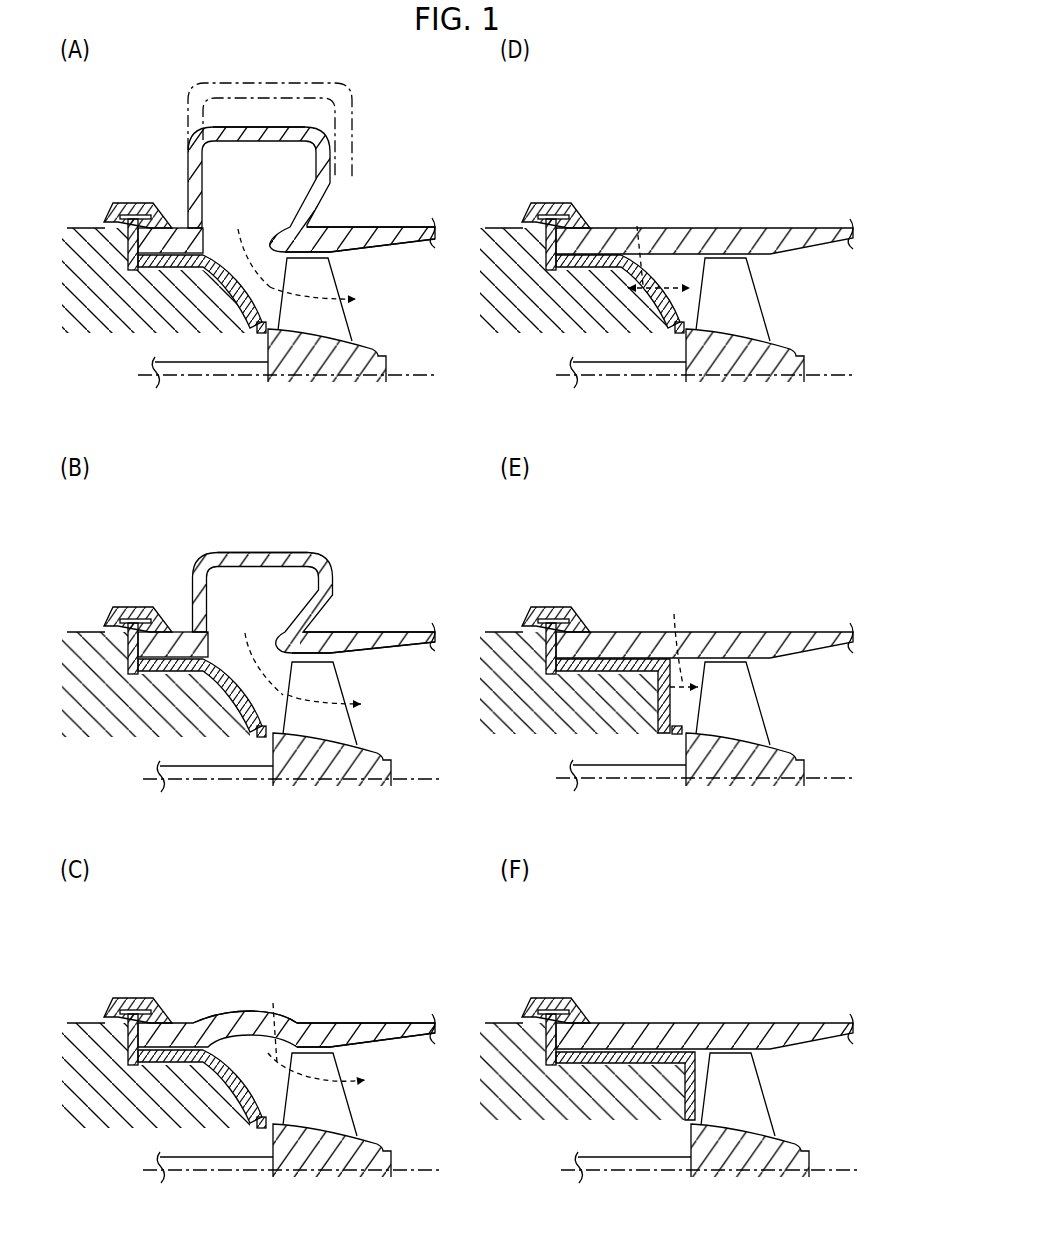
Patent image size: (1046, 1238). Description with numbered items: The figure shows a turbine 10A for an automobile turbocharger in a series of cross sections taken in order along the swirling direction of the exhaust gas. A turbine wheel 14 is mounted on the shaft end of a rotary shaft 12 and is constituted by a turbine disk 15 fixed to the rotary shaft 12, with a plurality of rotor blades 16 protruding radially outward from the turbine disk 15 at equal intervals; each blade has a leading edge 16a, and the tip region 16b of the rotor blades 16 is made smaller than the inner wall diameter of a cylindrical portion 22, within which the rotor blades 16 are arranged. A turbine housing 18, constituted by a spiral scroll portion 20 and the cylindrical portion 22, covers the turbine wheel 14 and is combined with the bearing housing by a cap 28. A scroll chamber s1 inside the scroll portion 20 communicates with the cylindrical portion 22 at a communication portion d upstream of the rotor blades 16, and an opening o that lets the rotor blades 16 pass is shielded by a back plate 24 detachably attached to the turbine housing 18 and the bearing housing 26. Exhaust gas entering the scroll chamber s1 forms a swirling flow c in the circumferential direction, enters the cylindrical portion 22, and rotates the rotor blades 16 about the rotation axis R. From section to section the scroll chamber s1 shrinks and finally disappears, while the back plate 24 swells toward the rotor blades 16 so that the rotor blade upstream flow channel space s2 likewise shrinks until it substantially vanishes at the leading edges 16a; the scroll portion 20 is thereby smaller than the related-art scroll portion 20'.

The turbine for a turbocharger 10A is at (371, 127).
The rotary shaft 12 is at (138, 376).
The turbine wheel 14 is at (378, 330).
The turbine disk 15 is at (368, 341).
The rotor blades 16 is at (336, 277).
The leading edges 16a is at (262, 328).
The blade tip portion 16b is at (360, 304).
The turbine housing 18 is at (266, 124).
The scroll portion 20 is at (250, 538).
The scroll portion of a radial turbine of the related art 20' is at (235, 125).
The cylindrical portion 22 is at (398, 227).
The back plate 24 is at (122, 268).
The bearing housing 26 is at (86, 228).
The cap 28 is at (134, 203).
The swirling flow c is at (460, 629).
The communication portion d is at (223, 240).
The opening o is at (170, 257).
The scroll chamber s1 is at (216, 216).
The rotor blade upstream flow channel space s2 is at (226, 298).
The rotation axis R is at (428, 375).